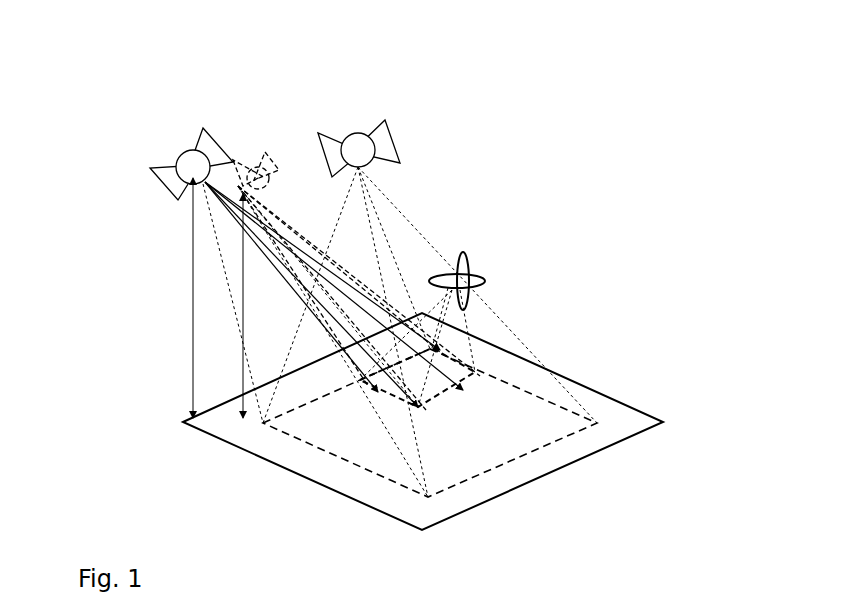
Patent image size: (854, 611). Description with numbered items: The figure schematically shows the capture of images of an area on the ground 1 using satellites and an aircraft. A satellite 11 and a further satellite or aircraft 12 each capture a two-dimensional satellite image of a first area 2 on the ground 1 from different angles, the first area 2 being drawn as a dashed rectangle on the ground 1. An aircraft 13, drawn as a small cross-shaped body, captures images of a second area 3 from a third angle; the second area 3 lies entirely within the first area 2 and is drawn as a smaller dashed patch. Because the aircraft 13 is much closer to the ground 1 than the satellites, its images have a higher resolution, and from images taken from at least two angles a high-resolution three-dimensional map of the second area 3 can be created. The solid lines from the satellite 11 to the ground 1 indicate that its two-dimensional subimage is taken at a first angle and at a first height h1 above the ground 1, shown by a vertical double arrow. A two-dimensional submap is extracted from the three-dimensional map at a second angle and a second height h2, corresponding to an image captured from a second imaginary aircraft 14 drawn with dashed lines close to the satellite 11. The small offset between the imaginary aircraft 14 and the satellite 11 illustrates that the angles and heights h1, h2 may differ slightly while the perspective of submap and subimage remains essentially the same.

The ground 1 is at (627, 417).
The first area 2 is at (487, 448).
The second area 3 is at (445, 388).
The second satellite 11 is at (173, 172).
The aircraft 12 is at (385, 125).
The aircraft 13 is at (473, 282).
The second imaginary aircraft 14 is at (247, 197).
The first height h1 is at (192, 366).
The second height h2 is at (243, 323).